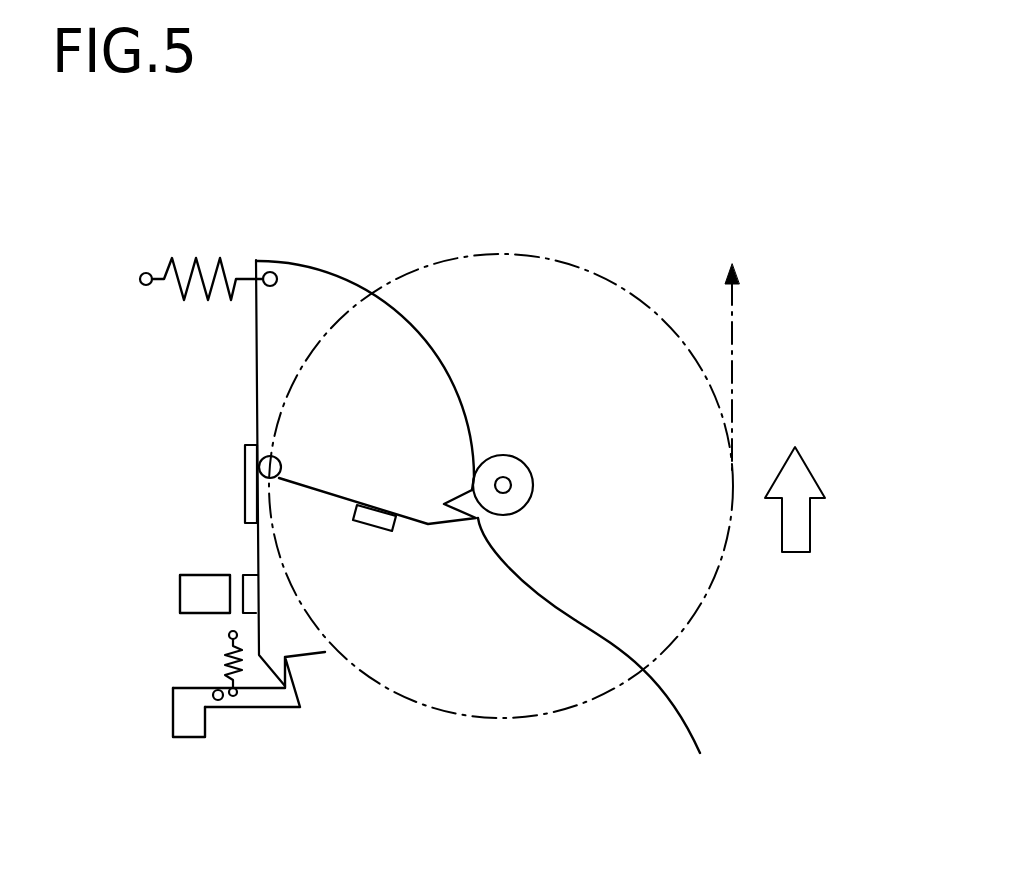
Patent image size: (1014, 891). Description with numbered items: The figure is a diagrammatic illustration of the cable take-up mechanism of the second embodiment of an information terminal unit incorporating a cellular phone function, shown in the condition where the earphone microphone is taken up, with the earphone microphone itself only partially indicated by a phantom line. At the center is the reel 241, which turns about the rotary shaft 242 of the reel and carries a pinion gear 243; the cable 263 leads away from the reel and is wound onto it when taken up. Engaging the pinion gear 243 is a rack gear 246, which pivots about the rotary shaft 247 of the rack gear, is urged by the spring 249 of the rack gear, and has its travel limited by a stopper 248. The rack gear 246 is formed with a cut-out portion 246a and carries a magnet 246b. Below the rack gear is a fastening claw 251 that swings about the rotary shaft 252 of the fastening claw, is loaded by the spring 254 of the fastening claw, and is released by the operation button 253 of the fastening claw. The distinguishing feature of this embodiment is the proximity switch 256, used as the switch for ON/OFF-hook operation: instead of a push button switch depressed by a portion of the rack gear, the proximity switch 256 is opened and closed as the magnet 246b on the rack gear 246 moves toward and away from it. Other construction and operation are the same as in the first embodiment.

The reel 241 is at (705, 600).
The rotary shaft of the reel 242 is at (514, 478).
The pinion gear 243 is at (503, 477).
The rack gear 246 is at (335, 277).
The cut-out portion 246a is at (619, 662).
The magnet 246b is at (374, 526).
The rotary shaft of the rack gear 247 is at (262, 458).
The stopper 248 is at (245, 498).
The spring of the rack gear 249 is at (193, 262).
The fastening claw 251 is at (285, 707).
The rotary shaft of the fastening claw 252 is at (218, 700).
The operation button of the fastening claw 253 is at (186, 716).
The spring of the fastening claw 254 is at (228, 661).
The proximity switch 256 is at (202, 592).
The cable 263 is at (735, 382).